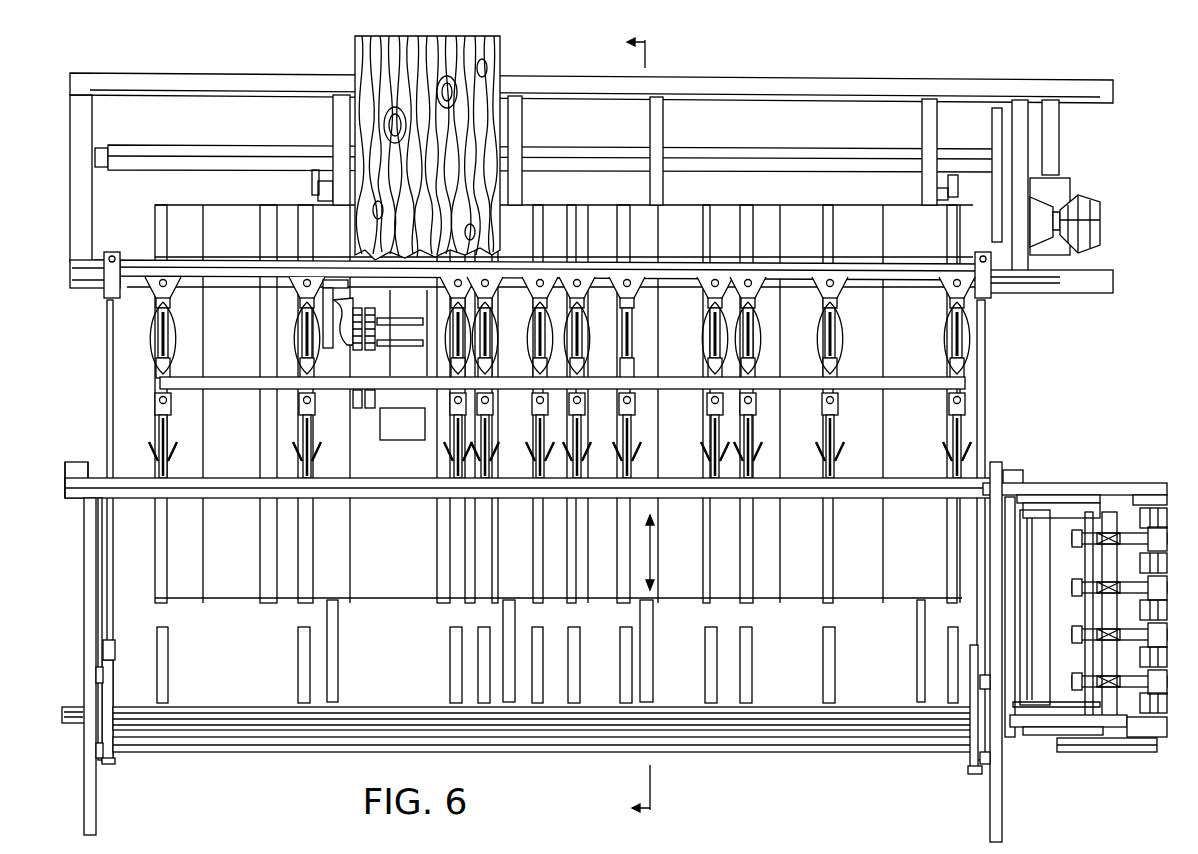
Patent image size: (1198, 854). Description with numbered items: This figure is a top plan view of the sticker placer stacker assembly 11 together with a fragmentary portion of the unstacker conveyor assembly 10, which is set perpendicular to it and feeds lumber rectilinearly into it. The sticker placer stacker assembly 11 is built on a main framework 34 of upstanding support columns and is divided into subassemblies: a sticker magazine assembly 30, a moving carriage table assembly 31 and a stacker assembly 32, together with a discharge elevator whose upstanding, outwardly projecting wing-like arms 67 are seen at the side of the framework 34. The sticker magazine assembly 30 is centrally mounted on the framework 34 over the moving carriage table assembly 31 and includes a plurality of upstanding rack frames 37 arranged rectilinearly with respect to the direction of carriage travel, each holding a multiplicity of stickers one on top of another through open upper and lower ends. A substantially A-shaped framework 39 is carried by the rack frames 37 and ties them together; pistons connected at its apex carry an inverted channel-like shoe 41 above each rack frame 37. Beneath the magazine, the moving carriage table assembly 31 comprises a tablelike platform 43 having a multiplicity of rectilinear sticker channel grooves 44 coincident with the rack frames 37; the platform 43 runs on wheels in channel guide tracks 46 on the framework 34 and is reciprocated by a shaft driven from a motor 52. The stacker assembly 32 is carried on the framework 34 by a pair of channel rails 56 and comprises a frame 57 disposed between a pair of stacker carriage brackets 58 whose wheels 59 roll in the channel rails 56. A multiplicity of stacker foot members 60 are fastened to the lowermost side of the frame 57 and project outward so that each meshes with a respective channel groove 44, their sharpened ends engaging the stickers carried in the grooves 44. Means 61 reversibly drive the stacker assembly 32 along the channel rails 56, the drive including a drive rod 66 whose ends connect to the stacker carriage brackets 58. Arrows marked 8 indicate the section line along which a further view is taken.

The section line 8- 8 is at (650, 429).
The unstacker conveyor assembly 10 is at (1053, 612).
The sticker placer stacker assembly 11 is at (389, 633).
The sticker magazine assembly 30 is at (869, 382).
The moving carriage table assembly 31 is at (381, 563).
The stacker assembly 32 is at (834, 748).
The main framework 34 is at (1022, 160).
The rack frames 37 is at (290, 443).
The A-shaped framework 39 is at (160, 426).
The inverted channel-like shoe 41 is at (316, 400).
The tablelike platform 43 is at (272, 597).
The sticker channel grooves 44 is at (157, 554).
The channel guide tracks 46 is at (331, 128).
The motor 52 is at (1098, 216).
The channel rails 56 is at (85, 790).
The frame 57 is at (915, 744).
The stacker carriage brackets 58 is at (116, 761).
The wheels 59 is at (95, 675).
The stacker foot members 60 is at (167, 671).
The means operable to reversably drive the stacker assembly 61 is at (104, 274).
The drive rod 66 is at (107, 340).
The wing-like arms 67 is at (338, 620).